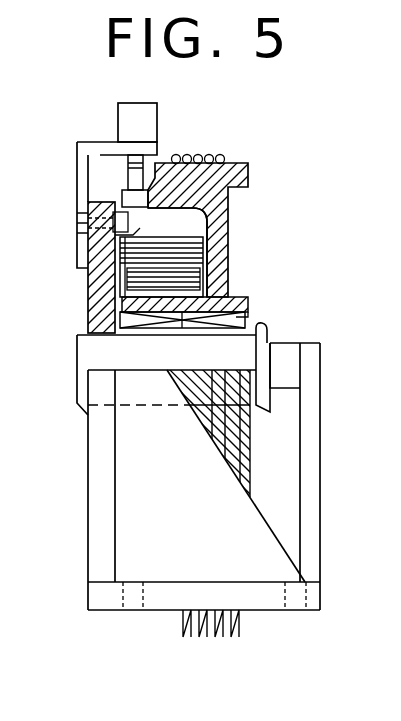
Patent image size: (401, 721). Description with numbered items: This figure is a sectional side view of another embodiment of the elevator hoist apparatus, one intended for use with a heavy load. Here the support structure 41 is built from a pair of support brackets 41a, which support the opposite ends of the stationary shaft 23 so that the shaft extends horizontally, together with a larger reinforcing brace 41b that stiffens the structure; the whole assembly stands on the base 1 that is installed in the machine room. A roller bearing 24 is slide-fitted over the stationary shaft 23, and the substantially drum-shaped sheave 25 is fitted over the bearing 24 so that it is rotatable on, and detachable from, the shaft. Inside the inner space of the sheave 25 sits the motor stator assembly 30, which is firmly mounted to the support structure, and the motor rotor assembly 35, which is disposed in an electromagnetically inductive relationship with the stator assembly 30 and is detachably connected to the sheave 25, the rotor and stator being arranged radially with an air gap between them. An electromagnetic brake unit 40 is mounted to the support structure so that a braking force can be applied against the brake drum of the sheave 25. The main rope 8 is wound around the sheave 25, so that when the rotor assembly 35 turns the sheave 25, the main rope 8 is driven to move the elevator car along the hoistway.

The electromagnetic brake unit 40 is at (188, 125).
The sheave 25 is at (196, 176).
The motor stator assembly 30 is at (223, 236).
The motor rotor assembly 35 is at (203, 283).
The roller bearing 24 is at (236, 318).
The stationary shaft 23 is at (252, 343).
The support structure 41 is at (88, 468).
The support brackets 41a is at (90, 525).
The reinforcing brace 41b is at (292, 552).
The base 1 is at (163, 610).
The main rope 8 is at (245, 630).